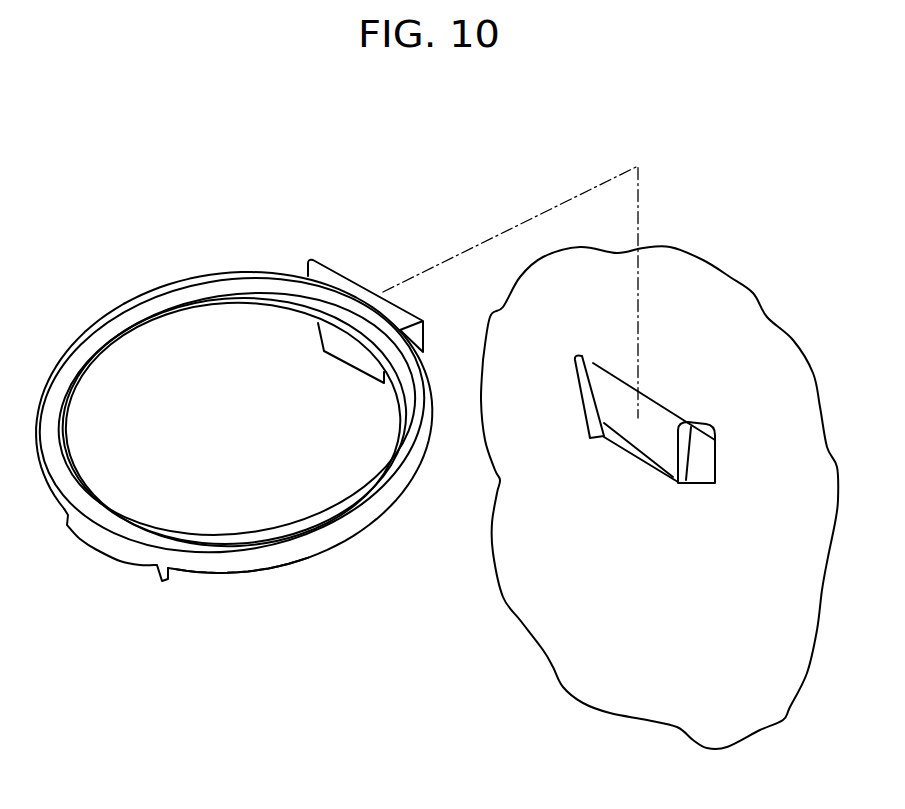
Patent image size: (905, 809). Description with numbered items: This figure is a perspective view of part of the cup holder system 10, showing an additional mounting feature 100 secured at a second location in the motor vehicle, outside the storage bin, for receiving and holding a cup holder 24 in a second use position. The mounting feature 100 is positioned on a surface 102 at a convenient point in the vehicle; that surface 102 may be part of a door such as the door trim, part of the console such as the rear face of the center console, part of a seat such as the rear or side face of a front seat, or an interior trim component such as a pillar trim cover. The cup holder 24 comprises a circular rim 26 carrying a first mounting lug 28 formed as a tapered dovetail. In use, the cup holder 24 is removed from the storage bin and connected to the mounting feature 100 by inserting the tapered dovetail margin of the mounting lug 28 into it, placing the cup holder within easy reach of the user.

The cup holder system 10 is at (173, 187).
The cup holder 24 is at (112, 593).
The circular rim 26 is at (262, 558).
The first mounting lug 28 is at (334, 280).
The mounting feature 100 is at (704, 450).
The surface 102 is at (560, 598).